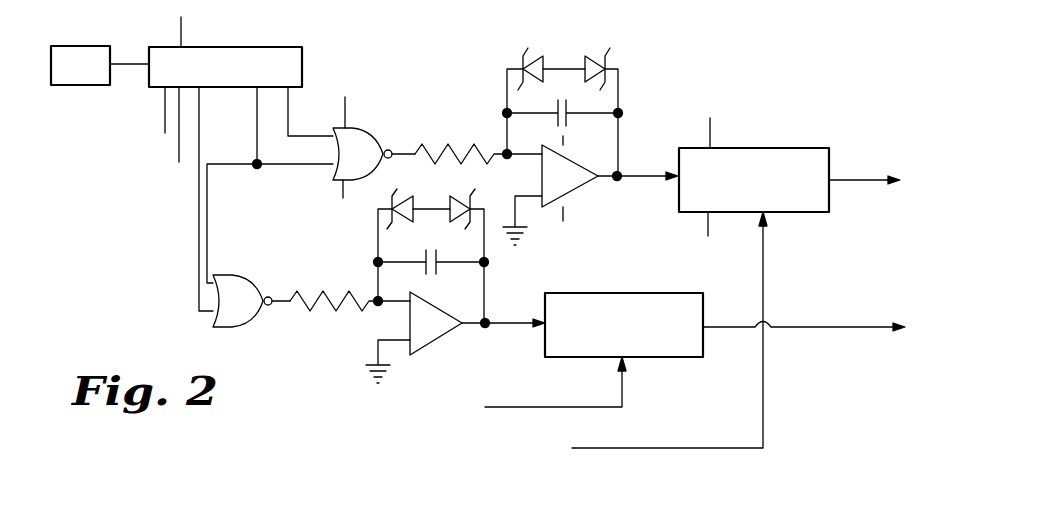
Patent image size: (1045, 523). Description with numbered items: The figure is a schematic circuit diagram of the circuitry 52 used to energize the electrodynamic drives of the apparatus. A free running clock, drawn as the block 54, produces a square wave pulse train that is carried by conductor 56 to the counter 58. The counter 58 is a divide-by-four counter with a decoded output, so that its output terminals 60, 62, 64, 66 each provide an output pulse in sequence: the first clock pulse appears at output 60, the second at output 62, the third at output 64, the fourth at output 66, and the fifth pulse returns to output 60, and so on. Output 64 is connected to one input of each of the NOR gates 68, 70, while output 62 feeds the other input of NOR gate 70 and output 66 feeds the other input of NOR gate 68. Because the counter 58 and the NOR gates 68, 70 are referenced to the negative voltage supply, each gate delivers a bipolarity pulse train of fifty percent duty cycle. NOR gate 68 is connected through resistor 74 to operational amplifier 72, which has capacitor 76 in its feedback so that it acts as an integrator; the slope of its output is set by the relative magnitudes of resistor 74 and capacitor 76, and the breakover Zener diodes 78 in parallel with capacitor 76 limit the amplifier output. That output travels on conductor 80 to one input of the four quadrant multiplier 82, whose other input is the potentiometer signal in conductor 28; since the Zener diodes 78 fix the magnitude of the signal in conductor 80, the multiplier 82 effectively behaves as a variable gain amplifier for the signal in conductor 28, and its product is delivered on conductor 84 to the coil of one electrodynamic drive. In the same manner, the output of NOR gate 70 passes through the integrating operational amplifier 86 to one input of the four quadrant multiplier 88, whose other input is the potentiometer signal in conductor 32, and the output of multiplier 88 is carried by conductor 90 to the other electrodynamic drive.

The conductor 28 is at (628, 448).
The conductor 32 is at (537, 407).
The circuitry 52 is at (672, 59).
The DSC block 54 is at (82, 86).
The conductor 56 is at (130, 64).
The counter 58 is at (253, 47).
The output terminal 60 is at (164, 117).
The output terminal 62 is at (199, 117).
The output terminal 64 is at (257, 117).
The output terminal 66 is at (297, 98).
The NOR gate 68 is at (372, 128).
The NOR gate 70 is at (247, 273).
The operational amplifier 72 is at (578, 190).
The resistor 74 is at (452, 144).
The capacitor 76 is at (567, 127).
The breakover Zener diodes 78 is at (592, 50).
The conductor 80 is at (638, 175).
The four quadrant multiplier 82 is at (742, 148).
The conductor 84 is at (860, 180).
The integrating operational amplifier 86 is at (437, 342).
The four quadrant multiplier 88 is at (620, 293).
The conductor 90 is at (822, 327).